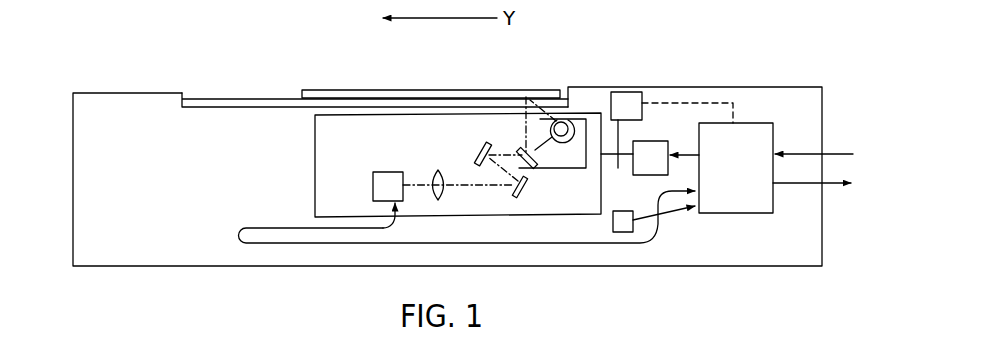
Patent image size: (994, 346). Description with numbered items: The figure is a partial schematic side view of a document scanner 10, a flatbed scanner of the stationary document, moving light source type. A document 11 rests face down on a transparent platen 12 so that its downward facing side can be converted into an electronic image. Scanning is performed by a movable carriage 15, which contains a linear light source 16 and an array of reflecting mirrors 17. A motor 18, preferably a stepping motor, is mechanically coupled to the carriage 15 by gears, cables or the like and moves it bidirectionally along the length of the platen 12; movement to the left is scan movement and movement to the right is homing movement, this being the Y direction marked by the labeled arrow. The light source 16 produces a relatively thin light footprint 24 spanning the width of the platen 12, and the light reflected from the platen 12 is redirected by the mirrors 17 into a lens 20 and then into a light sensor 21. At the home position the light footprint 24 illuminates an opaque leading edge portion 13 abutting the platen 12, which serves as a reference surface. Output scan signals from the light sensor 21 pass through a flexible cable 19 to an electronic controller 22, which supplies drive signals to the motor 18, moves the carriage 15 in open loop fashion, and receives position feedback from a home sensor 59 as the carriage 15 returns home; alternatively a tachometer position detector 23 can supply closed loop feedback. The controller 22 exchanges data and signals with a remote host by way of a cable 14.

The document scanner 10 is at (70, 218).
The document 11 is at (387, 90).
The transparent platen 12 is at (220, 98).
The opaque leading edge portion 13 is at (577, 83).
The cable 14 is at (855, 168).
The movable carriage 15 is at (313, 173).
The linear light source 16 is at (572, 115).
The array of reflecting mirrors 17 is at (501, 144).
The motor 18 is at (647, 152).
The flexible cable 19 is at (655, 228).
The lens 20 is at (433, 177).
The light sensor 21 is at (372, 186).
The electronic controller 22 is at (749, 180).
The tachometer position detector 23 is at (633, 102).
The light footprint 24 is at (526, 96).
The home sensor 59 is at (625, 232).